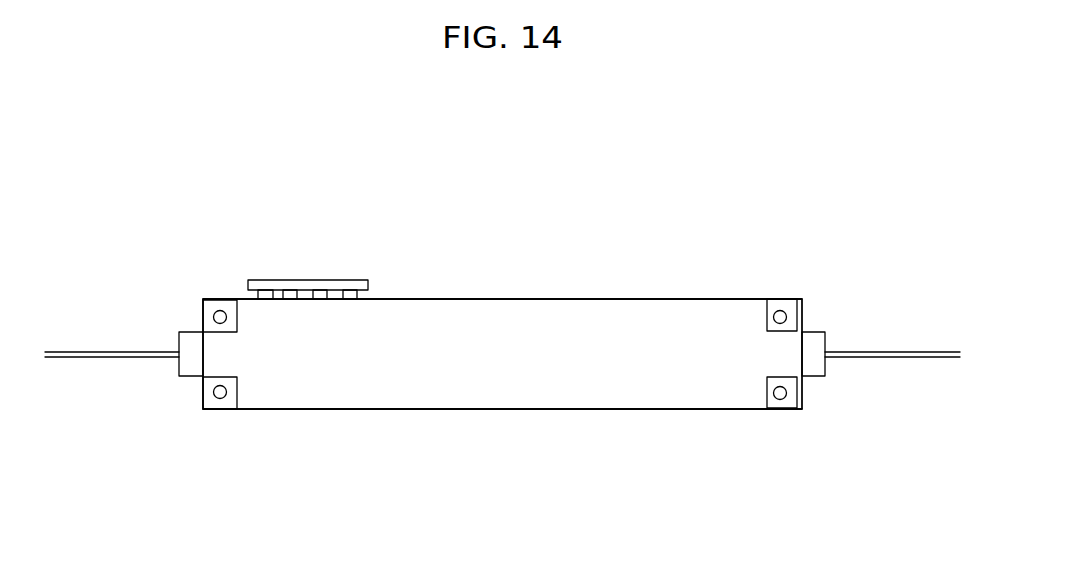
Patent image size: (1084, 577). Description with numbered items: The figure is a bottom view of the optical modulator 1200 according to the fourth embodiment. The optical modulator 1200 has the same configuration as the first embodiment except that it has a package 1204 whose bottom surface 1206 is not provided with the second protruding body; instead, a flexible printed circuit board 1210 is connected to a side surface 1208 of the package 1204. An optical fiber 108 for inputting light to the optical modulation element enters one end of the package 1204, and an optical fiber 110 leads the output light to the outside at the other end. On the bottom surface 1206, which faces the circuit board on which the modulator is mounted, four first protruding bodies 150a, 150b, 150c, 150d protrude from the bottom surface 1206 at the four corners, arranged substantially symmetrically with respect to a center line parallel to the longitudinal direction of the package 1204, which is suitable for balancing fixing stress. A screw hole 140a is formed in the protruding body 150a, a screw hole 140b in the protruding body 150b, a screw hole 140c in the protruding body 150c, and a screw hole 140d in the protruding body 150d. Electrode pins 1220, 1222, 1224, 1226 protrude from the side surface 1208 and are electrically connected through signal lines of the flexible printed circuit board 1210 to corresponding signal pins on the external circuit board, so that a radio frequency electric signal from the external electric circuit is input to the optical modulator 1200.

The optical fiber 108 is at (124, 400).
The optical fiber 110 is at (881, 402).
The screw hole 140a is at (198, 425).
The screw hole 140b is at (171, 307).
The screw hole 140c is at (800, 283).
The screw hole 140d is at (759, 431).
The protruding body 150a is at (246, 455).
The protruding body 150b is at (183, 271).
The protruding body 150c is at (745, 273).
The protruding body 150d is at (811, 456).
The optical modulator 1200 is at (700, 192).
The package 1204 is at (502, 449).
The bottom surface 1206 is at (502, 399).
The side surface 1208 is at (502, 244).
The flexible printed circuit board 1210 is at (365, 261).
The electrode pin 1220 is at (230, 226).
The electrode pin 1222 is at (271, 244).
The electrode pin 1224 is at (311, 204).
The electrode pin 1226 is at (373, 233).